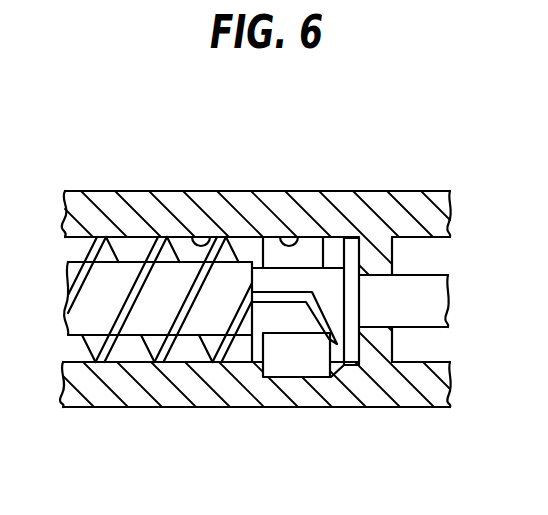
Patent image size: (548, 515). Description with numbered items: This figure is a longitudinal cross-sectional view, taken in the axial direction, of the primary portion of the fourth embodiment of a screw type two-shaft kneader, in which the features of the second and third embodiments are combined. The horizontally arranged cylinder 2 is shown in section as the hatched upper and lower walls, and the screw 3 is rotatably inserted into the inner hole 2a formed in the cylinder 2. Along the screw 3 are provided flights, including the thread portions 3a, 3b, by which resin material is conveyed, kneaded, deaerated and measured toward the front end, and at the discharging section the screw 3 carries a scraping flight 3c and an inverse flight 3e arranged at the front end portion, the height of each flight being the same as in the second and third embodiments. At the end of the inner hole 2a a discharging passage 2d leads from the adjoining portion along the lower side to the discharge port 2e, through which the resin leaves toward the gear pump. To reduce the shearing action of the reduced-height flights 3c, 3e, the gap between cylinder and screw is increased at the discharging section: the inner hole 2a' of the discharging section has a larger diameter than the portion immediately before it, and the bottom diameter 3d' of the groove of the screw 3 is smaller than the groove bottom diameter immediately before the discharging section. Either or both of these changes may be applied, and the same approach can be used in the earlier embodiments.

The cylinder 2 is at (120, 190).
The inner hole 2a is at (195, 191).
The inner hole of the discharging section 2a' is at (278, 191).
The discharging passage 2d is at (318, 370).
The discharge port 2e is at (300, 392).
The screw 3 is at (244, 364).
The inner hole immediately before the discharging section 3a is at (160, 299).
The thread of screw member 3b is at (81, 337).
The scraping flight 3c is at (278, 298).
The bottom diameter of the groove 3d' is at (363, 256).
The inverse flight 3e is at (318, 331).